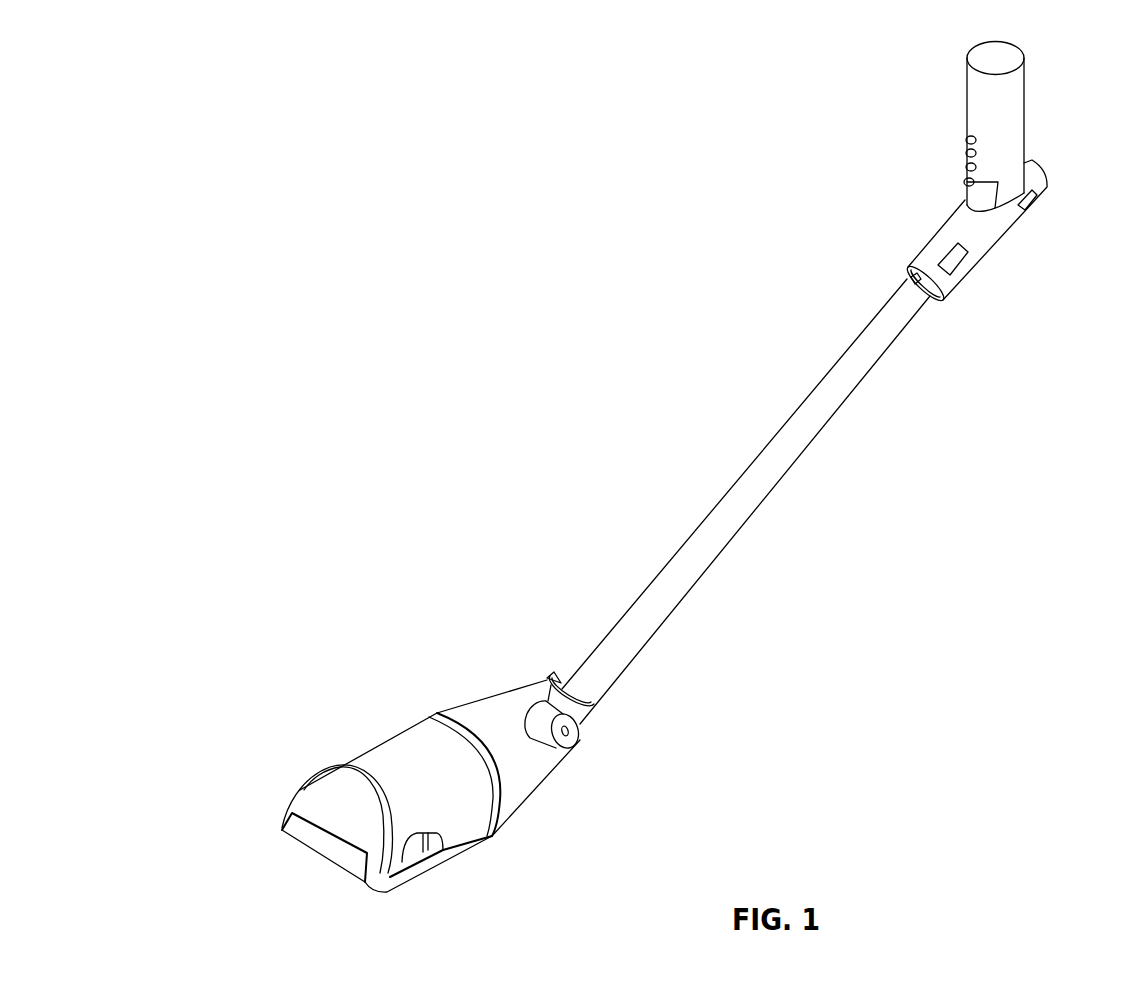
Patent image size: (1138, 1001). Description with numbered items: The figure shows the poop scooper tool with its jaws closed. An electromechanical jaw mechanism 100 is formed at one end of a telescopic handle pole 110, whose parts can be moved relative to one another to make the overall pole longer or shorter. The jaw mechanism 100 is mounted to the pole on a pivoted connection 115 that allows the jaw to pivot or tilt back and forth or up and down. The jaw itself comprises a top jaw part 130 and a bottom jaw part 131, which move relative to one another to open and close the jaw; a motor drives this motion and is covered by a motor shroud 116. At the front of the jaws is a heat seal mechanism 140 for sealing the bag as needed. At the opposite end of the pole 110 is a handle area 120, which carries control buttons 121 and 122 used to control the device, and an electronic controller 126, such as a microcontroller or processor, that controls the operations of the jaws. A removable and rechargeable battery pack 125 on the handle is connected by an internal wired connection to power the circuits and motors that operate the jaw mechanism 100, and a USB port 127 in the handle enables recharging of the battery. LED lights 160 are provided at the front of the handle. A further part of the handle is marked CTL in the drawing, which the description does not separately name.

The electromechanical jaw mechanism 100 is at (390, 725).
The telescopic handle pole 110 is at (712, 505).
The pivoted connection 115 is at (572, 745).
The motor shroud 116 is at (445, 704).
The handle area 120 is at (1034, 119).
The control button 121 is at (967, 181).
The control button 122 is at (965, 147).
The removable and rechargeable battery pack 125 is at (1022, 52).
The electronic controller 126 is at (938, 270).
The USB port 127 is at (1036, 200).
The top jaw part 130 is at (333, 775).
The bottom jaw part 131 is at (424, 866).
The heat seal mechanism 140 is at (310, 856).
The LED lights 160 is at (916, 292).
The control CTL is at (962, 257).